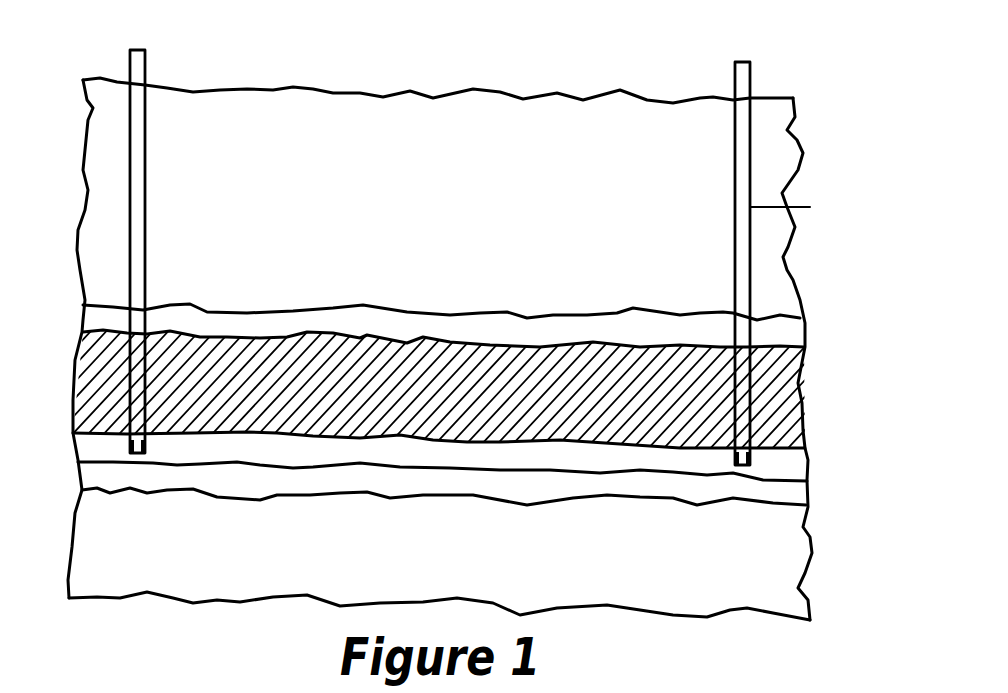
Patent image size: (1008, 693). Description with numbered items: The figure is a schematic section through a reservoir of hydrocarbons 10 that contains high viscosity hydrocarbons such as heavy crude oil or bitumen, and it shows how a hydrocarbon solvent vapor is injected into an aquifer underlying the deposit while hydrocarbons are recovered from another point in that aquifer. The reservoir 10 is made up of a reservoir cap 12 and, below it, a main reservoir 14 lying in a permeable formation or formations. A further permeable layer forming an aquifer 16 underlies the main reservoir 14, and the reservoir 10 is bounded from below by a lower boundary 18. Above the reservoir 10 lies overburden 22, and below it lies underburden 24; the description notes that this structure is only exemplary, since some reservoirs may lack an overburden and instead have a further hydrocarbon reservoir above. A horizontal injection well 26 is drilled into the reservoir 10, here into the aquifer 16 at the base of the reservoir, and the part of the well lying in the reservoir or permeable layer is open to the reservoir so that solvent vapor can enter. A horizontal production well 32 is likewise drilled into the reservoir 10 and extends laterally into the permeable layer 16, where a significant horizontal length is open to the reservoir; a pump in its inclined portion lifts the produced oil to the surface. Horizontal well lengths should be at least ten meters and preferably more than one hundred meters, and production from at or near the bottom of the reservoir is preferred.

The reservoir of hydrocarbons 10 is at (821, 412).
The reservoir cap 12 is at (808, 336).
The main reservoir 14 is at (800, 387).
The aquifer 16 is at (808, 470).
The lower boundary 18 is at (810, 497).
The overburden 22 is at (800, 224).
The underburden 24 is at (812, 553).
The horizontal injection well 26 is at (810, 207).
The horizontal production well 32 is at (150, 63).